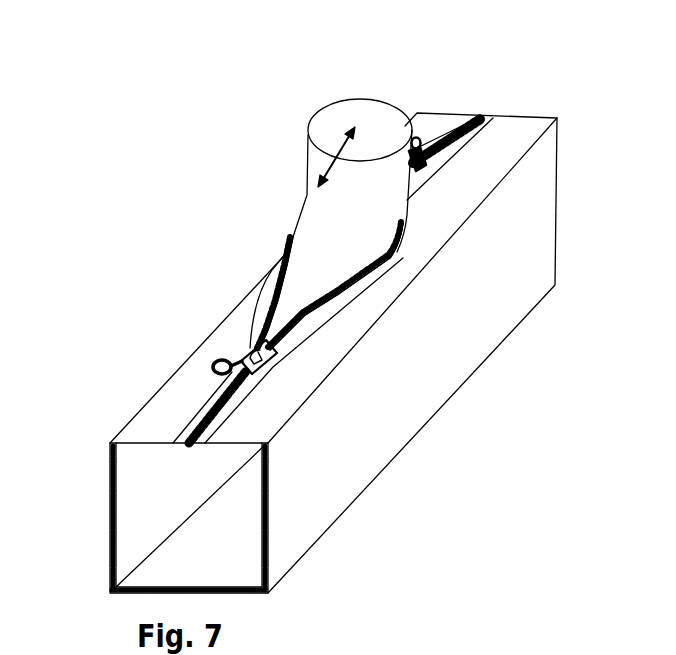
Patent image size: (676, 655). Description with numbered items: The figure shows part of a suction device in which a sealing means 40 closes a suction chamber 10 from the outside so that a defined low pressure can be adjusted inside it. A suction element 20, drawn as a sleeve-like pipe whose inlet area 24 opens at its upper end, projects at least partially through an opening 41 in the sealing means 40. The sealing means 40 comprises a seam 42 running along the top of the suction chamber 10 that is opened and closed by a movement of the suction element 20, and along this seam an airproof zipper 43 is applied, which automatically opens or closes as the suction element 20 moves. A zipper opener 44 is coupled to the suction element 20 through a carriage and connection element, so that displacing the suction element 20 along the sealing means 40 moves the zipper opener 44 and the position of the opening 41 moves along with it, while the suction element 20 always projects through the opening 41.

The suction chamber 10 is at (323, 475).
The suction element 20 is at (300, 194).
The inlet area 24 is at (327, 127).
The sealing means 40 is at (188, 403).
The opening 41 is at (380, 244).
The seam 42 is at (180, 455).
The zipper 43 is at (280, 298).
The zipper opener 44 is at (236, 360).